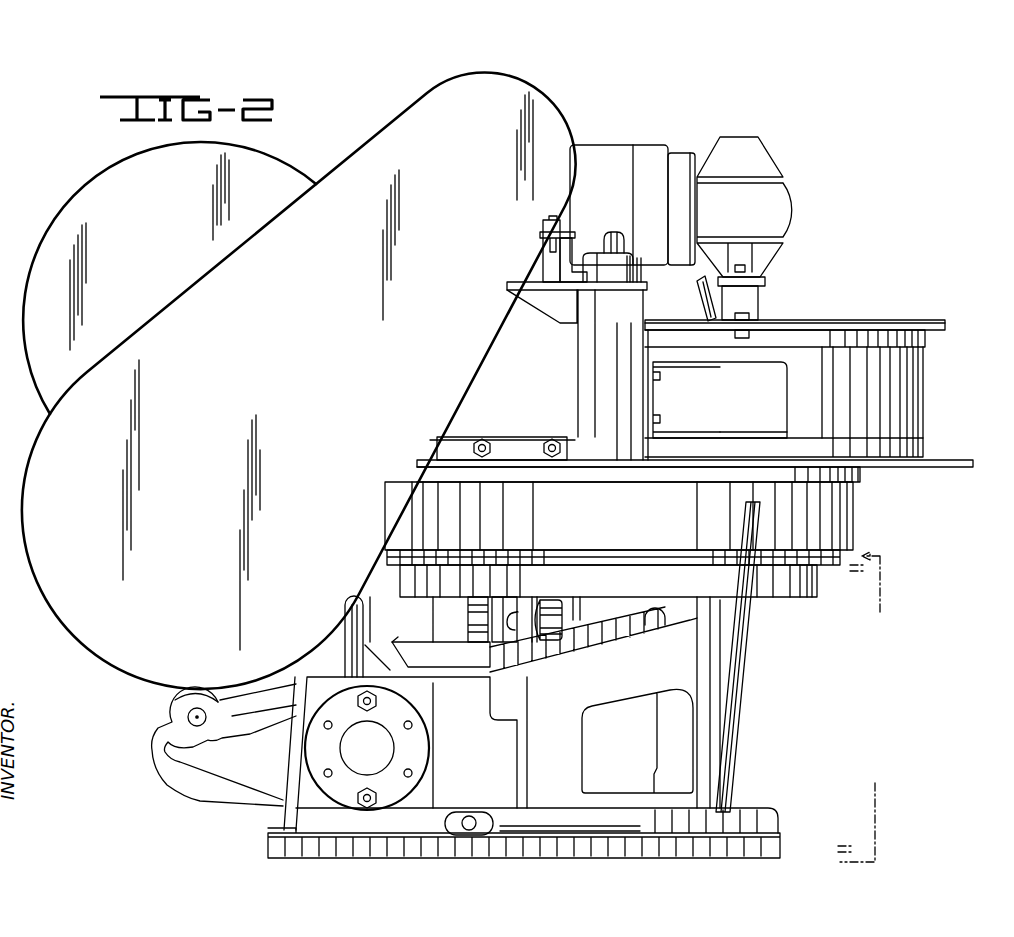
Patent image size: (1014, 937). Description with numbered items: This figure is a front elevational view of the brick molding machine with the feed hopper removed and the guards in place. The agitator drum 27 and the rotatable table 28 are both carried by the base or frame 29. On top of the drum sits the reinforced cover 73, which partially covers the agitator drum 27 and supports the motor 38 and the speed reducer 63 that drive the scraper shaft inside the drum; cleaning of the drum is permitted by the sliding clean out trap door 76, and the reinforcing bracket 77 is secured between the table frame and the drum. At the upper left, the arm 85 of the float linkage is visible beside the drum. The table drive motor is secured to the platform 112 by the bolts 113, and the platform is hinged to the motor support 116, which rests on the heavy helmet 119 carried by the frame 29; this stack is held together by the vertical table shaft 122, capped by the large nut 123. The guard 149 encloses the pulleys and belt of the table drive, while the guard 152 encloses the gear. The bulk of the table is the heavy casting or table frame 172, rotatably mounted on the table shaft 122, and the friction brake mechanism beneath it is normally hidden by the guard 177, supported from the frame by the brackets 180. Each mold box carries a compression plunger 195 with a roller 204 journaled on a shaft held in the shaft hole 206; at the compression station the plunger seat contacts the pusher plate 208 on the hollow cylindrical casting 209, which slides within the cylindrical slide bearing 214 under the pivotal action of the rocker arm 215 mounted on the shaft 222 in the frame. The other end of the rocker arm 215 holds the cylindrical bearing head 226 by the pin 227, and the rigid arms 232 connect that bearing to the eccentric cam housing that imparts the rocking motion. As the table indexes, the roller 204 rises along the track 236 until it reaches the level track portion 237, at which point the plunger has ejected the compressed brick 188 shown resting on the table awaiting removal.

The agitator drum 27 is at (905, 384).
The rotatable table 28 is at (860, 478).
The frame 29 is at (762, 812).
The motor 38 is at (622, 147).
The speed reducer 63 is at (782, 216).
The reinforced cover 73 is at (773, 320).
The sliding clean out trap door 76 is at (960, 470).
The reinforcing bracket 77 is at (728, 410).
The arm 85 is at (702, 301).
The platform 112 is at (577, 242).
The bolts 113 is at (567, 212).
The motor support 116 is at (642, 288).
The helmet 119 is at (523, 299).
The vertical table shaft 122 is at (619, 232).
The large nut 123 is at (607, 266).
The guard 149 is at (260, 342).
The guard 152 is at (117, 234).
The table frame 172 is at (820, 592).
The guard 177 is at (603, 524).
The brackets 180 is at (740, 651).
The compressed brick 188 is at (776, 446).
The compression plunger 195 is at (438, 612).
The roller 204 is at (565, 612).
The shaft hole 206 is at (512, 620).
The pusher plate 208 is at (413, 620).
The hollow cylindrical casting 209 is at (441, 654).
The cylindrical slide bearing 214 is at (412, 646).
The rocker arm 215 is at (238, 798).
The shaft 222 is at (350, 757).
The cylindrical bearing head 226 is at (228, 700).
The pin 227 is at (188, 716).
The rigid arms 232 is at (168, 700).
The track 236 is at (543, 662).
The level track portion 237 is at (648, 626).